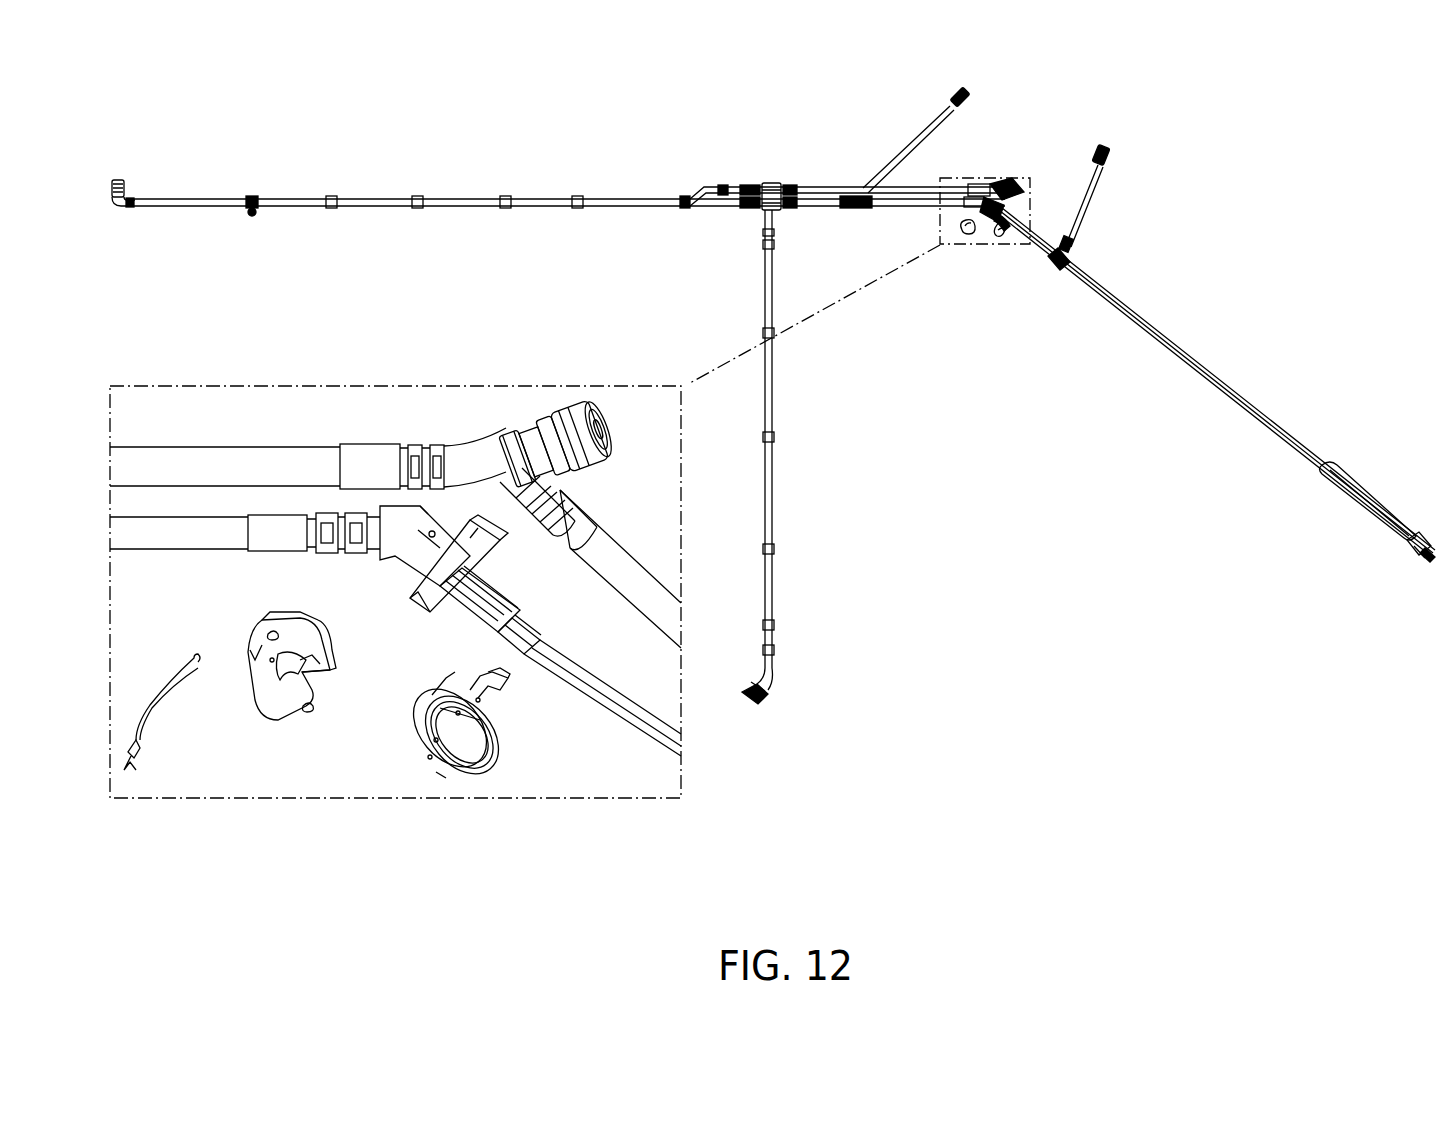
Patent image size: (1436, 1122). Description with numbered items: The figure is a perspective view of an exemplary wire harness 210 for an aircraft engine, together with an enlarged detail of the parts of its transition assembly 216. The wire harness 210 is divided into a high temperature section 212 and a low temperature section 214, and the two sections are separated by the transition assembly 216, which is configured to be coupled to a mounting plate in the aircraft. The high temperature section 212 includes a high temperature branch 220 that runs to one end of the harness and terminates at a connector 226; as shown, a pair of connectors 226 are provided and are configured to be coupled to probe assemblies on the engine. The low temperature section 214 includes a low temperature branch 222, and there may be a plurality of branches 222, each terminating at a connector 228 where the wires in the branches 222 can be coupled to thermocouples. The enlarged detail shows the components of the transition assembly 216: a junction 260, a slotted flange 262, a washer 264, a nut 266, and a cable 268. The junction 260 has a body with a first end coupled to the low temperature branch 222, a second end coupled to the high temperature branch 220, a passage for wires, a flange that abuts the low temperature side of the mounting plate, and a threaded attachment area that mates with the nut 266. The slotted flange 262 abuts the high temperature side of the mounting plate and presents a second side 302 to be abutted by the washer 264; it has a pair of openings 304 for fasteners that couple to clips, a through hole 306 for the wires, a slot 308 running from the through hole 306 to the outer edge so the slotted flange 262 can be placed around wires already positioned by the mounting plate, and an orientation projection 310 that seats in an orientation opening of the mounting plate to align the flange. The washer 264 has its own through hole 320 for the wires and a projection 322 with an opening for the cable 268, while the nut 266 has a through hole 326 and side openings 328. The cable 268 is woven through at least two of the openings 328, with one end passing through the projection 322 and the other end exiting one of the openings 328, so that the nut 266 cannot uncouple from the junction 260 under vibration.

The wire harness 210 is at (1281, 118).
The high temperature section 212 is at (1202, 326).
The low temperature section 214 is at (822, 176).
The transition assembly 216 is at (983, 262).
The high temperature branch 220 is at (1216, 385).
The low temperature branch 222 is at (838, 212).
The connector 226 is at (1427, 562).
The elbow connector 228 is at (778, 680).
The junction 260 is at (395, 600).
The slotted flange 262 is at (268, 660).
The washer 264 is at (426, 724).
The nut 266 is at (472, 790).
The cable 268 is at (126, 768).
The second side 302 is at (278, 735).
The openings 304 is at (262, 622).
The through hole 306 is at (308, 665).
The slot 308 is at (324, 668).
The orientation projection 310 is at (200, 668).
The through hole 320 is at (466, 706).
The projection 322 is at (506, 684).
The through hole 326 is at (472, 772).
The openings 328 is at (480, 750).